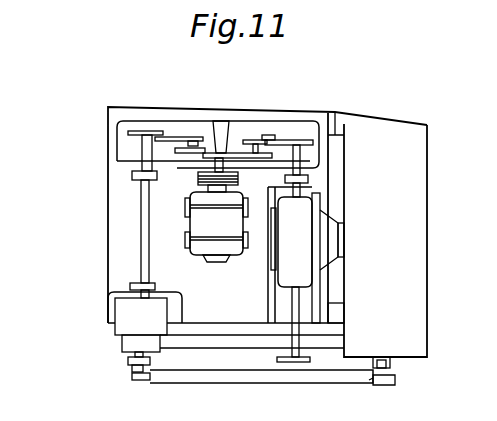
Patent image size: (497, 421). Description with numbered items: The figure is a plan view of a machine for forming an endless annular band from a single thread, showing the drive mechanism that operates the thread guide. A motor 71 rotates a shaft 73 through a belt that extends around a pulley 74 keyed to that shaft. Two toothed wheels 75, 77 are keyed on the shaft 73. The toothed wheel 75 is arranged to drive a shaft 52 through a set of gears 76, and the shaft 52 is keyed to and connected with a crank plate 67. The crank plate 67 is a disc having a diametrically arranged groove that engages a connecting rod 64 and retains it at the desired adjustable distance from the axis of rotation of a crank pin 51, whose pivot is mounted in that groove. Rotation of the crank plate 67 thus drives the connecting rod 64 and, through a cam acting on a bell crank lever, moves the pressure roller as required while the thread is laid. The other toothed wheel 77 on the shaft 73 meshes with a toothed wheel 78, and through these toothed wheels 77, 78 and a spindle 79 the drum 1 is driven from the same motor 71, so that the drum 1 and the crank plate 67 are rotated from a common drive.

The drum 1 is at (412, 171).
The crank pin 51 is at (132, 369).
The shaft 52 is at (143, 220).
The connecting rod 64 is at (189, 374).
The crank plate 67 is at (129, 362).
The motor 71 is at (203, 232).
The shaft 73 is at (223, 152).
The pulley 74 is at (200, 180).
The toothed wheel 75 is at (217, 150).
The set of gears 76 is at (178, 138).
The toothed wheel 77 is at (248, 140).
The toothed wheel 78 is at (262, 142).
The spindle 79 is at (302, 156).